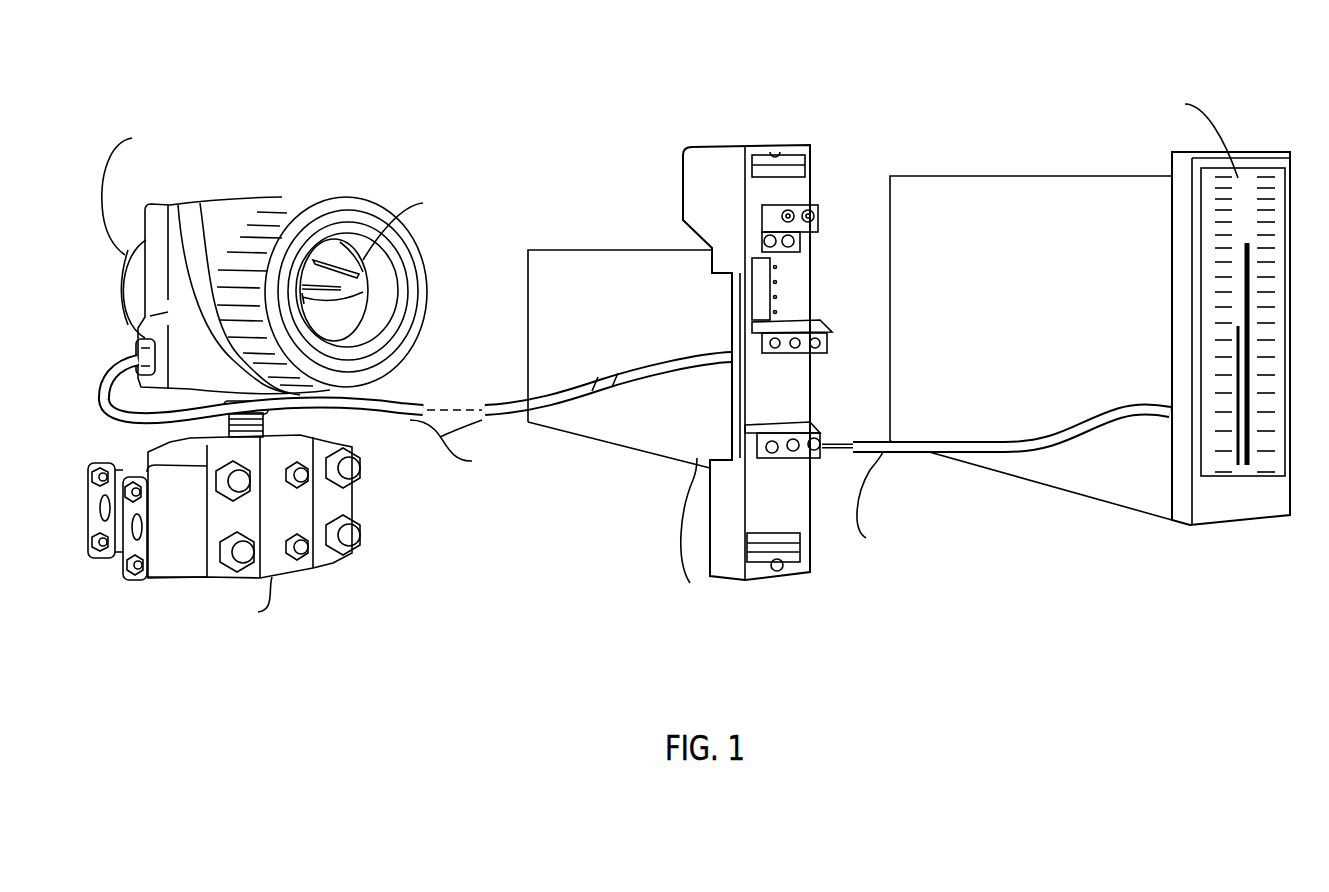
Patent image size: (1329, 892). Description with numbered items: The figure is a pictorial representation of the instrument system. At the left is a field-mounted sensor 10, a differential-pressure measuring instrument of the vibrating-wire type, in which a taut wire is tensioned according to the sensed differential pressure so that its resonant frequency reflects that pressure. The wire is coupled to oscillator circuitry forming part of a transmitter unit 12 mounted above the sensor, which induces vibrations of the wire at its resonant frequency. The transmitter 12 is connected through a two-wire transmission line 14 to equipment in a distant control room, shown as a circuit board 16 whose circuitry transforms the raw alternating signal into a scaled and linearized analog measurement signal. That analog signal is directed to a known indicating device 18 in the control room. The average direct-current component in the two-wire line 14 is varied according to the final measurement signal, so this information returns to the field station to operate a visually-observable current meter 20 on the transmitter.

The field-mounted sensor 10 is at (332, 572).
The transmitter unit 12 is at (125, 238).
The two-wire transmission line 14 is at (430, 405).
The circuit board 16 is at (634, 462).
The indicating device 18 is at (1245, 142).
The current meter 20 is at (366, 291).